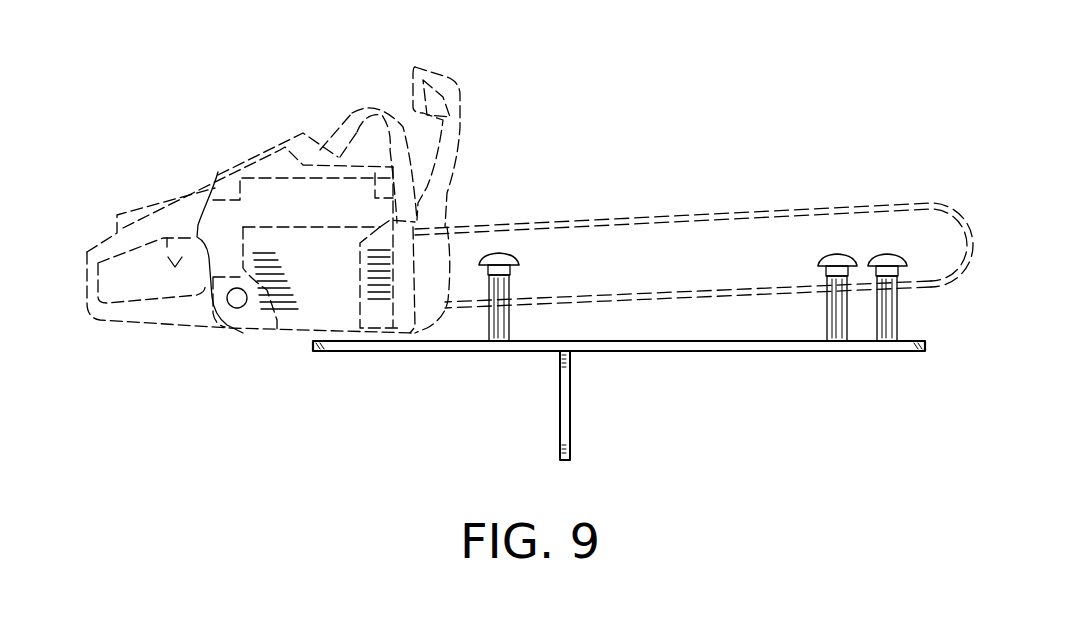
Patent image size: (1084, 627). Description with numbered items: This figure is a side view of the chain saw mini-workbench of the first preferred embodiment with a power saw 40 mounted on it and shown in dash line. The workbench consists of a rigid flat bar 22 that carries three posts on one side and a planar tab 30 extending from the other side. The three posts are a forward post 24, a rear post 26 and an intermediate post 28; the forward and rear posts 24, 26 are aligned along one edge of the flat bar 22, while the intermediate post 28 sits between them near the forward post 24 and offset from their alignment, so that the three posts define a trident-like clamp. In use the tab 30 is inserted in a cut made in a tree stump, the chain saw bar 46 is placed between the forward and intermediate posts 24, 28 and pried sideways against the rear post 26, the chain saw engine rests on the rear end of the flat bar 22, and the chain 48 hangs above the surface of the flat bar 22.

The flat bar 22 is at (782, 353).
The forward post 24 is at (892, 257).
The rear post 26 is at (503, 257).
The intermediate post 28 is at (830, 257).
The planar tab 30 is at (560, 402).
The power saw 40 is at (265, 193).
The chain saw bar 46 is at (694, 285).
The chain 48 is at (720, 302).